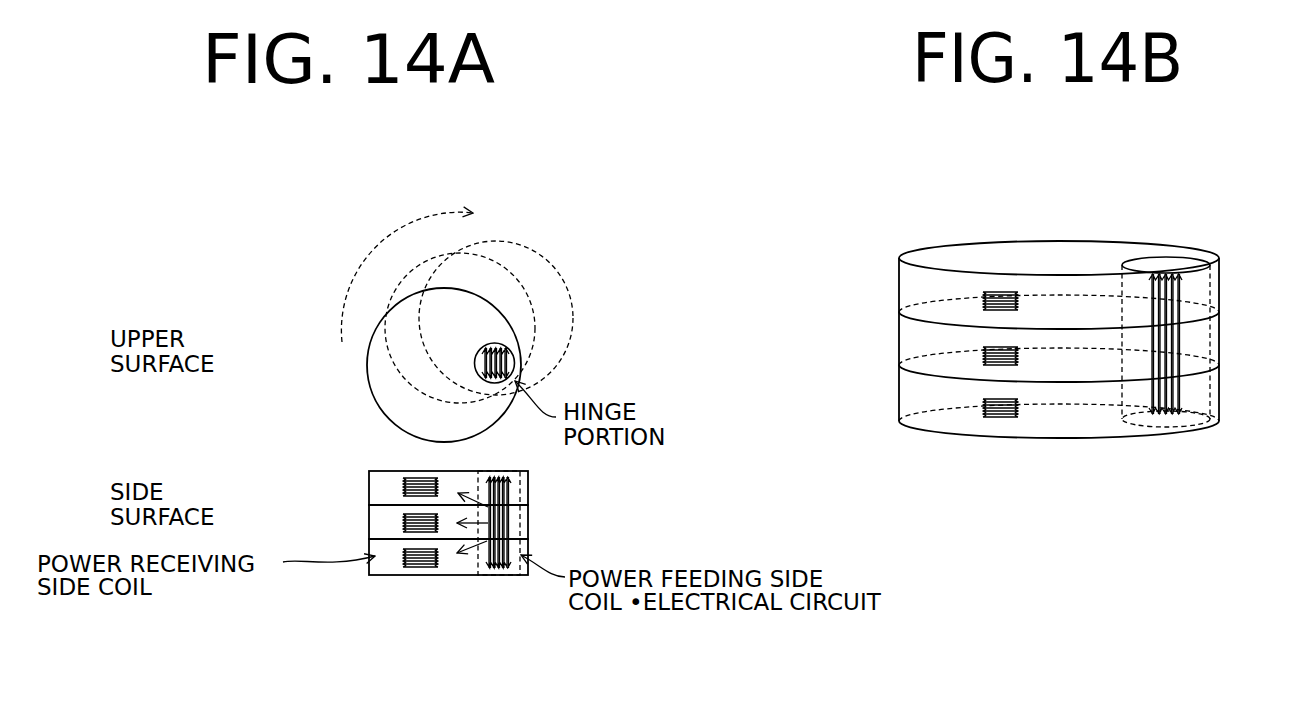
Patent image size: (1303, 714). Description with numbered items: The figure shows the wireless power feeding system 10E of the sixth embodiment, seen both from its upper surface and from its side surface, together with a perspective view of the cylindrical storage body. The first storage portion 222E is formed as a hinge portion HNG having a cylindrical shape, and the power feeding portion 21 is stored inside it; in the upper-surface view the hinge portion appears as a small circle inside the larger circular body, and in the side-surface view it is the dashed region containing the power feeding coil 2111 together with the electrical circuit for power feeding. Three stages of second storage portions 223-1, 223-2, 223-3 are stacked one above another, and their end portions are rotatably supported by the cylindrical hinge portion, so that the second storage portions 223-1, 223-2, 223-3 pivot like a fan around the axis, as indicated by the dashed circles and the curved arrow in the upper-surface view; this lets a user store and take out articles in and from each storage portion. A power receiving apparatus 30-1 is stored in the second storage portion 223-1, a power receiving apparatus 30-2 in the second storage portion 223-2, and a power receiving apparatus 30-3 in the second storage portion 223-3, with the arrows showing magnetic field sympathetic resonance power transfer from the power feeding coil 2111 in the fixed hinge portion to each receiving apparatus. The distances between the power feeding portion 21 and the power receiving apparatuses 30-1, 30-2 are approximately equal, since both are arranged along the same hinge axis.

In FIG. 14A, the power receiving apparatus 30-1 is at (422, 480).
In FIG. 14B, the power receiving apparatus 30-1 is at (998, 292).
In FIG. 14A, the power receiving apparatus 30-2 is at (428, 517).
In FIG. 14B, the power receiving apparatus 30-2 is at (993, 366).
In FIG. 14A, the power receiving apparatus 30-3 is at (422, 567).
In FIG. 14B, the power receiving apparatus 30-3 is at (1003, 417).
In FIG. 14A, the second storage portion 223-1 is at (368, 490).
In FIG. 14B, the second storage portion 223-1 is at (899, 297).
In FIG. 14A, the second storage portion 223-2 is at (368, 522).
In FIG. 14B, the second storage portion 223-2 is at (899, 347).
In FIG. 14A, the second storage portion 223-3 is at (368, 568).
In FIG. 14B, the second storage portion 223-3 is at (899, 394).
In FIG. 14A, the power feeding coil 2111 is at (505, 492).
In FIG. 14B, the first storage portion 222E is at (1185, 273).
In FIG. 14B, the power feeding portion 21 is at (1188, 358).
In FIG. 14B, the wireless power feeding system 10E is at (757, 191).